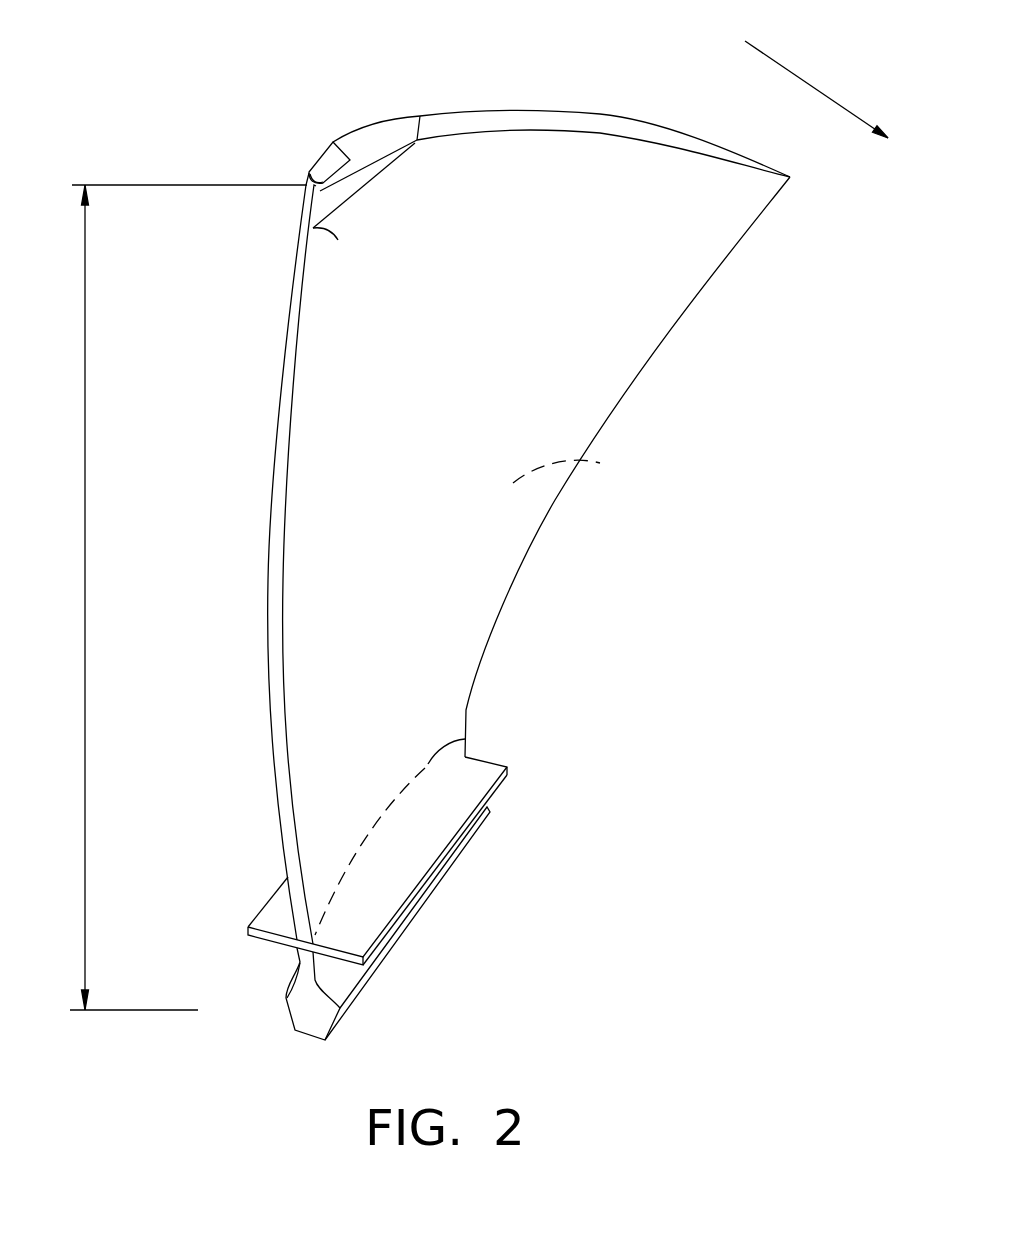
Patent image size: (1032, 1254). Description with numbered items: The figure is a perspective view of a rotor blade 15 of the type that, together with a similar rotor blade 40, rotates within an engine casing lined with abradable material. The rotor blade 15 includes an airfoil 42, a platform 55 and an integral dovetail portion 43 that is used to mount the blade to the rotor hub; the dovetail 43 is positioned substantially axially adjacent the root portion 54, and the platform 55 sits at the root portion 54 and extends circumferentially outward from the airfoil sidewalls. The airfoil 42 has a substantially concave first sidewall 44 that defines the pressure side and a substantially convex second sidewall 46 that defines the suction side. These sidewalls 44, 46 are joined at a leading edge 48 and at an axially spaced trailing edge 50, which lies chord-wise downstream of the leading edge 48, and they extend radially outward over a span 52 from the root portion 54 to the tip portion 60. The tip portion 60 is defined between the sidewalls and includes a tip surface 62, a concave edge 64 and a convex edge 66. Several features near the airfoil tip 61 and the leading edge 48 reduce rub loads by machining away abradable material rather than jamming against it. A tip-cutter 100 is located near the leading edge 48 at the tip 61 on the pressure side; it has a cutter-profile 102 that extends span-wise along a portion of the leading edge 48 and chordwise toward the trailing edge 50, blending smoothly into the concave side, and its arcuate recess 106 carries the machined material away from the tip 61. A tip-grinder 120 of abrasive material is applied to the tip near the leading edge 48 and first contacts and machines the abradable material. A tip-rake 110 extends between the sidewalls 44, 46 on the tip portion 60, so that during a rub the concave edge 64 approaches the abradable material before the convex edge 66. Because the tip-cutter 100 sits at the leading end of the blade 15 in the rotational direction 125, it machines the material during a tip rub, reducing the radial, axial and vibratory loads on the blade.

The rotor blade 15 is at (712, 718).
The rotor blade 40 is at (788, 612).
The airfoil 42 is at (705, 355).
The dovetail portion 43 is at (272, 1057).
The first sidewall 44 is at (602, 377).
The second sidewall 46 is at (576, 467).
The leading edge 48 is at (270, 486).
The trailing edge 50 is at (703, 277).
The span 52 is at (88, 622).
The root portion 54 is at (466, 740).
The platform 55 is at (402, 876).
The tip portion 60 is at (327, 132).
The airfoil tip 61 is at (447, 113).
The tip surface 62 is at (575, 122).
The concave edge 64 is at (510, 133).
The convex edge 66 is at (427, 113).
The tip-cutter 100 is at (368, 192).
The cutter-profile 102 is at (305, 212).
The arcuate recess 106 is at (322, 224).
The tip-rake 110 is at (497, 115).
The tip-grinder 120 is at (328, 167).
The rotational direction 125 is at (803, 78).